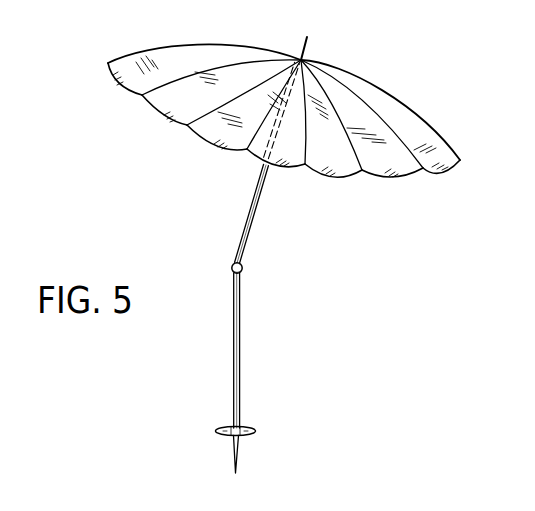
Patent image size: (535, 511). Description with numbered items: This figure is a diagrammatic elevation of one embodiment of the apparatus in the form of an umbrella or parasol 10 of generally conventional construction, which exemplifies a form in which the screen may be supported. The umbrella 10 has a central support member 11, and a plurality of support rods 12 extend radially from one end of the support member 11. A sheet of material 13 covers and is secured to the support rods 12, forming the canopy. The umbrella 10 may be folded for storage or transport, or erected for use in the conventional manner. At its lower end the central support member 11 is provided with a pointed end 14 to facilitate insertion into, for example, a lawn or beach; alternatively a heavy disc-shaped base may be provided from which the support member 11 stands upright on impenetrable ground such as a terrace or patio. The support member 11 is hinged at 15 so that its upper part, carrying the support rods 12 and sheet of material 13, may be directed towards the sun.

The umbrella or parasol 10 is at (284, 262).
The central support member 11 is at (233, 377).
The support rods 12 is at (333, 110).
The sheet of material 13 is at (172, 102).
The pointed end 14 is at (237, 447).
The hinge 15 is at (232, 266).